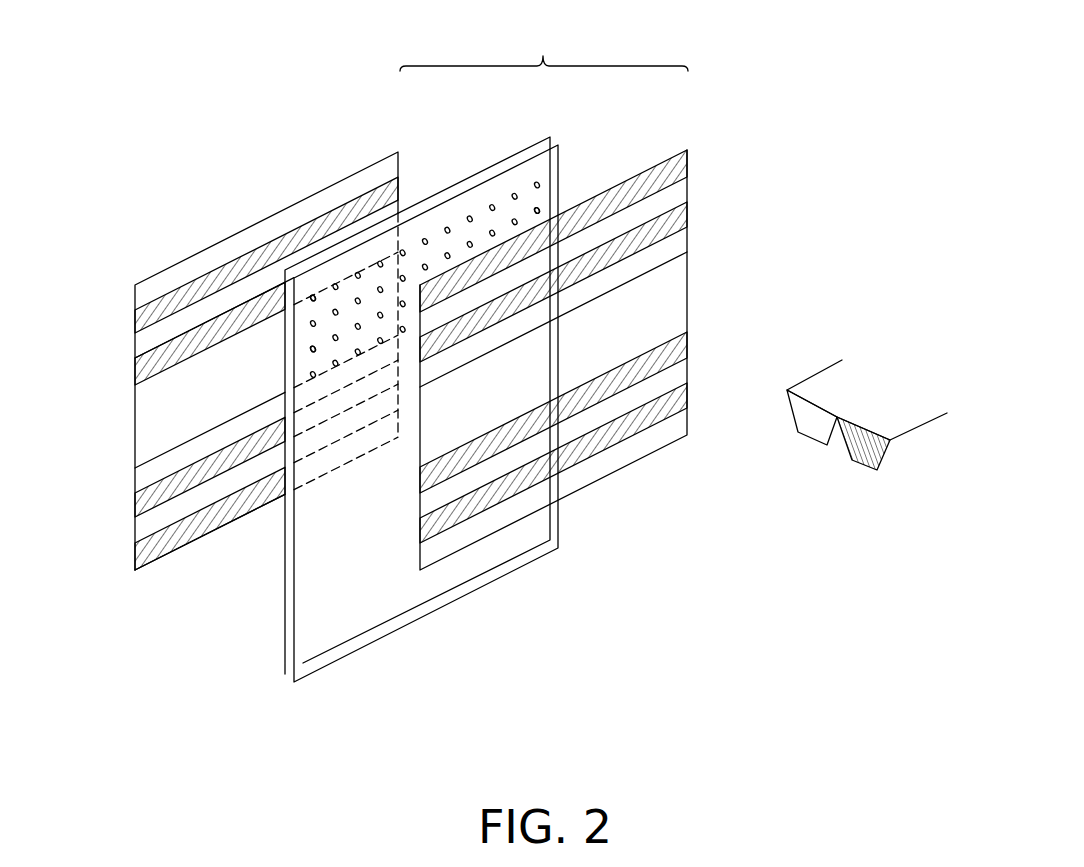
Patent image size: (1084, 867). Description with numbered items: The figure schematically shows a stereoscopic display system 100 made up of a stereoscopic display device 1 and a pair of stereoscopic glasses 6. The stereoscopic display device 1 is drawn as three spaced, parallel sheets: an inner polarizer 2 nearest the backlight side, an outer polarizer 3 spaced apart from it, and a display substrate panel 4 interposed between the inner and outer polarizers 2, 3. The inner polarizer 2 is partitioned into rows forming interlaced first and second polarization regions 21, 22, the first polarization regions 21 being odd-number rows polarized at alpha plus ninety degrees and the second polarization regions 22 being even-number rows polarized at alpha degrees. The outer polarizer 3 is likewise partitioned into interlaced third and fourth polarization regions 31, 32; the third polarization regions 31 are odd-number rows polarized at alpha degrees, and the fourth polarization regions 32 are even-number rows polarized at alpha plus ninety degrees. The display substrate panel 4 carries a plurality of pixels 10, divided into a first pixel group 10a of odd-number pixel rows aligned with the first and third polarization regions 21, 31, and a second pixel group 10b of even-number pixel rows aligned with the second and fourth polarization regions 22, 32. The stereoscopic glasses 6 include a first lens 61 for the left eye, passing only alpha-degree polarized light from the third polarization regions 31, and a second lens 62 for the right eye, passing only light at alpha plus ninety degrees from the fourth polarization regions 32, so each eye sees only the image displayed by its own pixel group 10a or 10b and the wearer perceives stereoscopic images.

The stereoscopic display system 100 is at (825, 105).
The stereoscopic display device 1 is at (544, 45).
The inner polarizer 2 is at (160, 572).
The first polarization regions 21 is at (142, 293).
The second polarization regions 22 is at (142, 323).
The outer polarizer 3 is at (643, 473).
The third polarization regions 31 is at (687, 165).
The fourth polarization regions 32 is at (675, 192).
The display substrate panel 4 is at (412, 630).
The pixels 10 is at (358, 274).
The first pixel group 10a is at (310, 348).
The second pixel group 10b is at (540, 208).
The stereoscopic glasses 6 is at (883, 337).
The first lens 61 is at (867, 457).
The second lens 62 is at (802, 420).